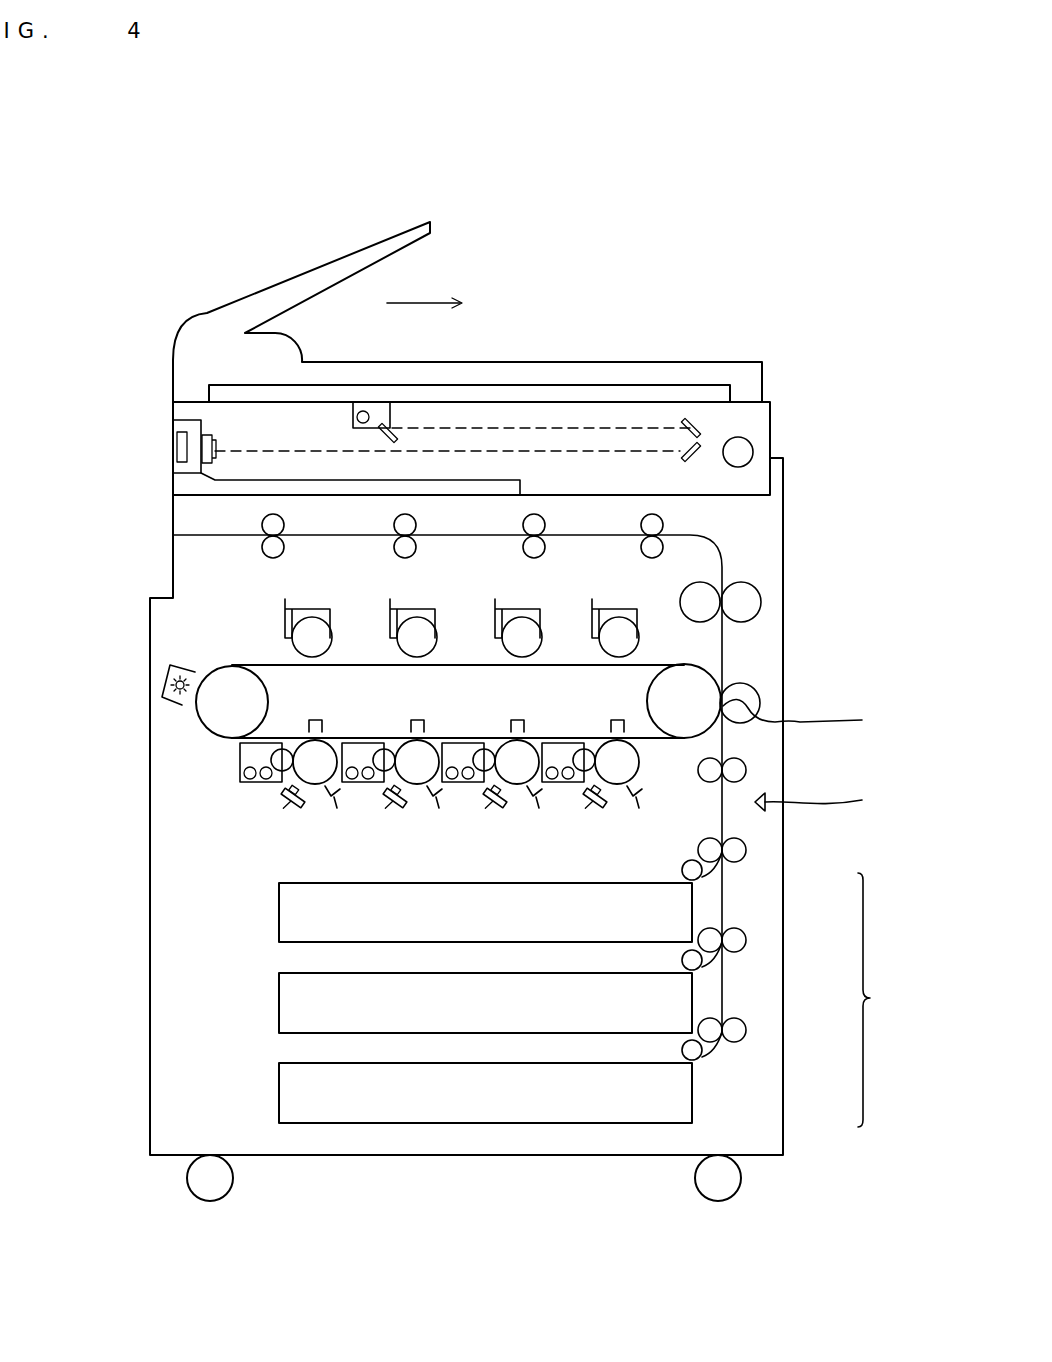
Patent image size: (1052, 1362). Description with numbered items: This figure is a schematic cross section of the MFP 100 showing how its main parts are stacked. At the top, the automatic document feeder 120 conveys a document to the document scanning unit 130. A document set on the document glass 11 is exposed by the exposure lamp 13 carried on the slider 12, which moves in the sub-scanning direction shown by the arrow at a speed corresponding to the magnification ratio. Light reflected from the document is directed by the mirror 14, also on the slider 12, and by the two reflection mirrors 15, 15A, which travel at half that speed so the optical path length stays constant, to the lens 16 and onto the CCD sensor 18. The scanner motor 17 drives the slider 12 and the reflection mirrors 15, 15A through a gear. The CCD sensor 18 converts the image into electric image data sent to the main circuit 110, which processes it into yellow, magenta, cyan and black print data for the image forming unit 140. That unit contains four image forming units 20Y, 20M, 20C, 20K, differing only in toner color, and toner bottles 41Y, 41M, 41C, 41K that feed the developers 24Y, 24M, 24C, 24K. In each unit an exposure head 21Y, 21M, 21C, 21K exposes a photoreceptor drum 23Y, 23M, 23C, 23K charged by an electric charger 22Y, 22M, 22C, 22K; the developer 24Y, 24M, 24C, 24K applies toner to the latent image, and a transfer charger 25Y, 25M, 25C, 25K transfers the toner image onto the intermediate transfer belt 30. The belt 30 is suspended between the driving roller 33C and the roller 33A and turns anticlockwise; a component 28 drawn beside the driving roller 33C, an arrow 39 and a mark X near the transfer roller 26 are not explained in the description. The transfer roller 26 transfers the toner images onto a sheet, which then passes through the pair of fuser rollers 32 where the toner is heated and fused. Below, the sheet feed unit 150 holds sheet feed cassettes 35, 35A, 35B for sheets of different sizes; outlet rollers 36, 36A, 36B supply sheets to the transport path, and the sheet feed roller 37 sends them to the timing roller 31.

The MFP 100 is at (750, 208).
The automatic document feeder 120 is at (281, 284).
The document scanning unit 130 is at (775, 406).
The main circuit 110 is at (255, 483).
The image forming unit 140 is at (790, 652).
The sheet feed unit 150 is at (890, 1000).
The document glass 11 is at (469, 383).
The slider 12 is at (380, 413).
The exposure lamp 13 is at (362, 410).
The mirror 14 is at (384, 441).
The reflection mirror 15 is at (683, 420).
The reflection mirror 15A is at (701, 445).
The lens 16 is at (210, 440).
The scanner motor 17 is at (752, 450).
The CCD sensor 18 is at (180, 443).
The belt cleaning device 28 is at (168, 682).
The intermediate transfer belt 30 is at (445, 666).
The roller 33A is at (690, 690).
The driving roller 33C is at (218, 723).
The transfer roller 26 is at (758, 690).
The pair of fuser rollers 32 is at (758, 596).
The timing roller 31 is at (746, 768).
The sheet feed roller 37 is at (746, 848).
The outlet roller 36 is at (681, 875).
The outlet roller 36A is at (681, 965).
The outlet roller 36B is at (681, 1055).
The sheet feed cassette 35 is at (279, 921).
The sheet feed cassette 35A is at (279, 1004).
The sheet feed cassette 35B is at (279, 1094).
The paper transport path 39 is at (825, 799).
The transport direction X is at (801, 716).
The toner bottle 41Y is at (315, 625).
The toner bottle 41M is at (420, 625).
The toner bottle 41C is at (522, 628).
The toner bottle 41K is at (621, 628).
The image forming unit 20Y is at (280, 775).
The image forming unit 20M is at (394, 775).
The image forming unit 20C is at (494, 775).
The image forming unit 20K is at (600, 775).
The exposure head 21Y is at (289, 807).
The exposure head 21M is at (391, 807).
The exposure head 21C is at (491, 807).
The exposure head 21K is at (591, 807).
The electric charger 22Y is at (336, 808).
The electric charger 22M is at (438, 808).
The electric charger 22C is at (538, 808).
The electric charger 22K is at (639, 808).
The photoreceptor drum 23Y is at (305, 745).
The photoreceptor drum 23M is at (405, 745).
The photoreceptor drum 23C is at (505, 745).
The photoreceptor drum 23K is at (605, 745).
The developer 24Y is at (243, 783).
The developer 24M is at (362, 784).
The developer 24C is at (463, 784).
The developer 24K is at (563, 784).
The transfer charger 25Y is at (318, 717).
The transfer charger 25M is at (420, 717).
The transfer charger 25C is at (520, 717).
The transfer charger 25K is at (620, 717).